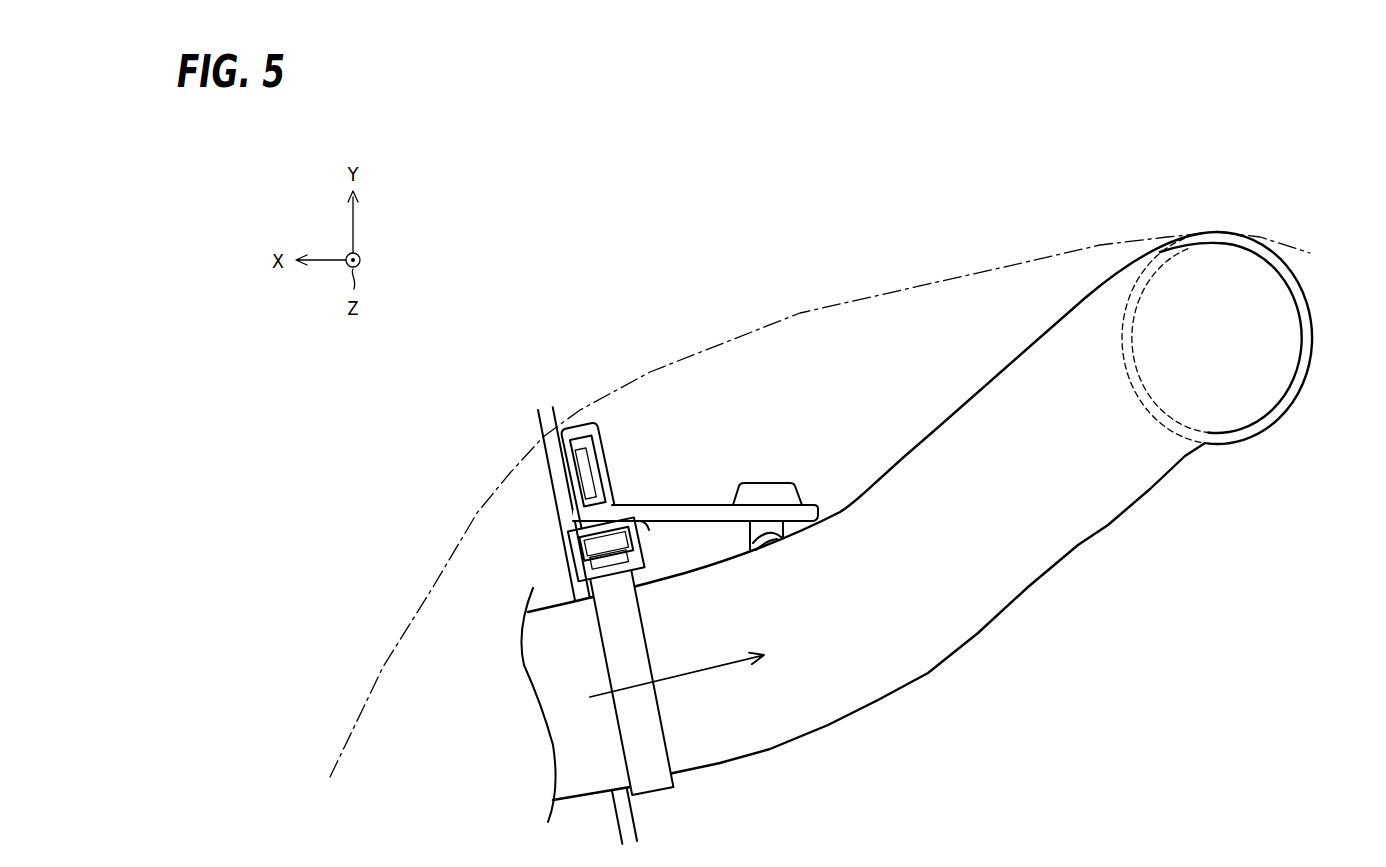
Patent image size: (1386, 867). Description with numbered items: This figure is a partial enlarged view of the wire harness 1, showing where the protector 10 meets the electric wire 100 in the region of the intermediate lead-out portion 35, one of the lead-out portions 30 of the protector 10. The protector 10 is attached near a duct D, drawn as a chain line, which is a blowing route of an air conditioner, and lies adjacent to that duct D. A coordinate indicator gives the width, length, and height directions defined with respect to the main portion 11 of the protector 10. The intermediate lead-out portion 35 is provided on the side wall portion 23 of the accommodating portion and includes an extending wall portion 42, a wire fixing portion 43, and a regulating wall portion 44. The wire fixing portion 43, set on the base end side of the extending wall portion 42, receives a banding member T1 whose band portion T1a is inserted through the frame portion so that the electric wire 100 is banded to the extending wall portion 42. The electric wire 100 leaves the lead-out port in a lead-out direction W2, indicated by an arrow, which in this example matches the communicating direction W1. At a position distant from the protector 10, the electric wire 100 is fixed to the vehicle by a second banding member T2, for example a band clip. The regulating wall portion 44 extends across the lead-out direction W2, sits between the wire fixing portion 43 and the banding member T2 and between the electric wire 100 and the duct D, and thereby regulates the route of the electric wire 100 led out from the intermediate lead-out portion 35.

The wire harness 1 is at (924, 543).
The protector 10 is at (645, 821).
The main portion 11 is at (618, 805).
The side wall portion 23 is at (545, 417).
The lead-out portions 30 is at (740, 537).
The intermediate lead-out portion 35 is at (775, 496).
The extending wall portion 42 is at (665, 540).
The wire fixing portion 43 is at (602, 517).
The regulating wall portion 44 is at (702, 512).
The electric wire 100 is at (872, 700).
The duct D is at (867, 297).
The banding member T1 is at (594, 690).
The band portion T1a is at (600, 652).
The banding member T2 is at (1296, 377).
The communicating direction W1 is at (713, 675).
The lead-out direction W2 is at (683, 691).